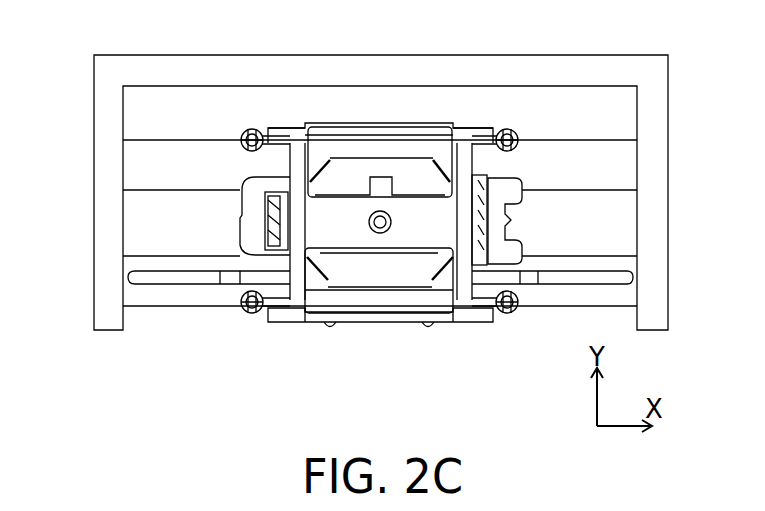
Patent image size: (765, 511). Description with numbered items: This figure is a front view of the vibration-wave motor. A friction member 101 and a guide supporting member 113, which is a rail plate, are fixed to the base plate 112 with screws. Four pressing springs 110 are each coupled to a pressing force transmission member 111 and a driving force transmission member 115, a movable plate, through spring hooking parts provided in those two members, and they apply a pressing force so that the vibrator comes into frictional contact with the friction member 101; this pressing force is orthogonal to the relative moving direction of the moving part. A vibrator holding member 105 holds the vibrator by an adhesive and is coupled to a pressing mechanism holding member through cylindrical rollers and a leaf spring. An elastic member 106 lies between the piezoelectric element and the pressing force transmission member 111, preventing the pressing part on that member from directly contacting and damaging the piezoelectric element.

The friction member 101 is at (140, 215).
The vibrator holding member 105 is at (368, 277).
The elastic member 106 is at (400, 305).
The pressing springs 110 is at (240, 131).
The pressing force transmission member 111 is at (348, 207).
The base plate 112 is at (125, 63).
The guide supporting member 113 is at (140, 170).
The driving force transmission member 115 is at (285, 127).